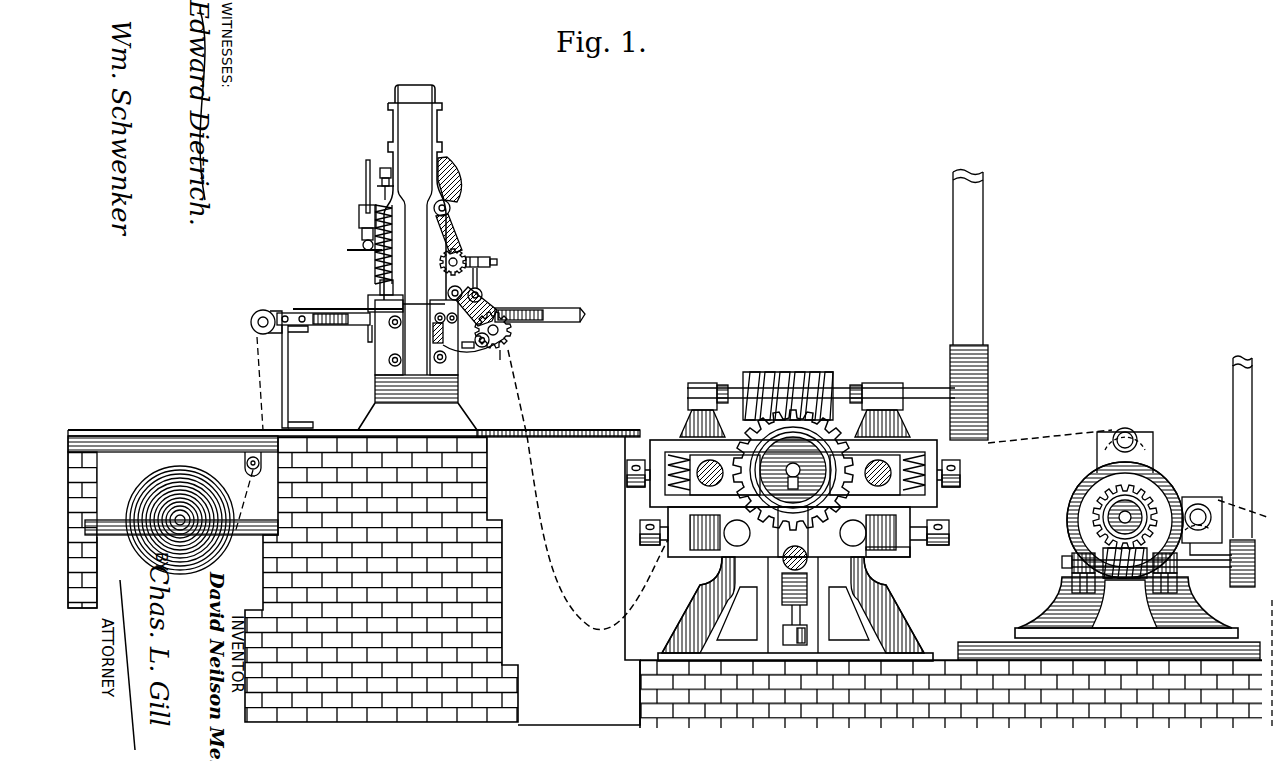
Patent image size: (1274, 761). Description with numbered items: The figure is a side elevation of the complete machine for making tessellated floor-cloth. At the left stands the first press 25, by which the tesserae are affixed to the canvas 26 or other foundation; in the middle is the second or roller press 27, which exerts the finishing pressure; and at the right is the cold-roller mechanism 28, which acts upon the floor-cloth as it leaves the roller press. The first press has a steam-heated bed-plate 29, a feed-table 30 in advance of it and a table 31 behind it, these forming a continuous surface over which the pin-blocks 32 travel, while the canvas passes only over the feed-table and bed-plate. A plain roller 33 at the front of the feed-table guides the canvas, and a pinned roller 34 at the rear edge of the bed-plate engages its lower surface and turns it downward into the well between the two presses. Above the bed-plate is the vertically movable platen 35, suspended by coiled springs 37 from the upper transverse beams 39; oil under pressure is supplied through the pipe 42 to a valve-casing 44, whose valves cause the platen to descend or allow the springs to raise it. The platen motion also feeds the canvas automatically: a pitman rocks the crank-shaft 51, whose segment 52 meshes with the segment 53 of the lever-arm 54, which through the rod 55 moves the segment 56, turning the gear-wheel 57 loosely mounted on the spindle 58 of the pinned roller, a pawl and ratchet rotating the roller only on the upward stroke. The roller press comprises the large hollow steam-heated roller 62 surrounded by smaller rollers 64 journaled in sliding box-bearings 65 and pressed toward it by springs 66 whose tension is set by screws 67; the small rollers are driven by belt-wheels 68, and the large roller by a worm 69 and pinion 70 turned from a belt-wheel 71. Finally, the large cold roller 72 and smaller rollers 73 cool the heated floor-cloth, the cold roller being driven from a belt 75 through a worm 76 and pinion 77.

The first press 25 is at (417, 257).
The canvas 26 is at (262, 386).
The second or roller press 27 is at (795, 395).
The cold-roller mechanism 28 is at (1134, 442).
The bed-plate 29 is at (368, 332).
The feed-table 30 is at (327, 328).
The table 31 is at (585, 309).
The pin-blocks 32 is at (299, 308).
The plain roller 33 is at (251, 327).
The roller 34 is at (510, 345).
The platen 35 is at (368, 300).
The coiled springs 37 is at (375, 263).
The upper transverse beams 39 is at (385, 178).
The pipe 42 is at (366, 178).
The valve-casing 44 is at (359, 218).
The crank-shaft 51 is at (452, 208).
The segment 52 is at (463, 234).
The segment 53 is at (470, 256).
The lever-arm 54 is at (498, 262).
The rod 55 is at (483, 286).
The segment 56 is at (498, 300).
The gear-wheel 57 is at (500, 362).
The spindle 58 is at (486, 350).
The hollow roller 62 is at (750, 385).
The smaller rollers 64 is at (680, 435).
The sliding box-bearings 65 is at (835, 580).
The springs 66 is at (910, 550).
The screws 67 is at (627, 474).
The belt-wheels 68 is at (700, 575).
The worm 69 is at (790, 372).
The pinion 70 is at (830, 432).
The belt-wheel 71 is at (980, 305).
The cold roller 72 is at (1160, 480).
The smaller rollers 73 is at (1128, 428).
The belt 75 is at (1233, 372).
The worm 76 is at (1147, 572).
The pinion 77 is at (1093, 525).